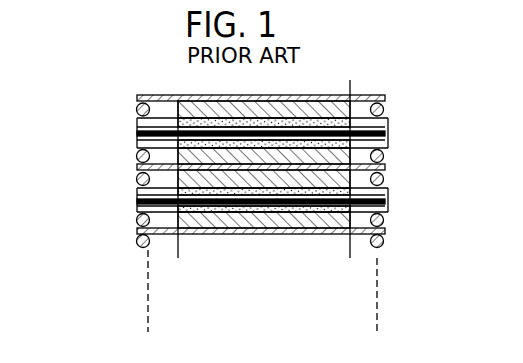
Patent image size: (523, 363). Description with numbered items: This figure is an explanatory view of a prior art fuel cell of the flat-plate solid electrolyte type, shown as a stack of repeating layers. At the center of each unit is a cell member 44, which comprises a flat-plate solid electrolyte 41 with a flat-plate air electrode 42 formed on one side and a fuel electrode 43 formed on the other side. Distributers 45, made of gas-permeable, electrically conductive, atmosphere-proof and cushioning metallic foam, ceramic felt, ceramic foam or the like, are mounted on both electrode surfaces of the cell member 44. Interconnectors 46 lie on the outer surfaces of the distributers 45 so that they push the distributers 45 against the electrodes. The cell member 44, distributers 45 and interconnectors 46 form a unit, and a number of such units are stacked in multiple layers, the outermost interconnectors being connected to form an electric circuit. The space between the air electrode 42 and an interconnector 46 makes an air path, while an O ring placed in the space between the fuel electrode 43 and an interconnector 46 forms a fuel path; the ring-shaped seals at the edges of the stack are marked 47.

The flat-plate solid electrolyte 41 is at (386, 128).
The flat-plate air electrode 42 is at (386, 146).
The fuel electrode 43 is at (386, 113).
The cell member 44 is at (136, 135).
The distributer 45 is at (172, 95).
The interconnector 46 is at (426, 266).
The sealing ring 47 is at (382, 108).